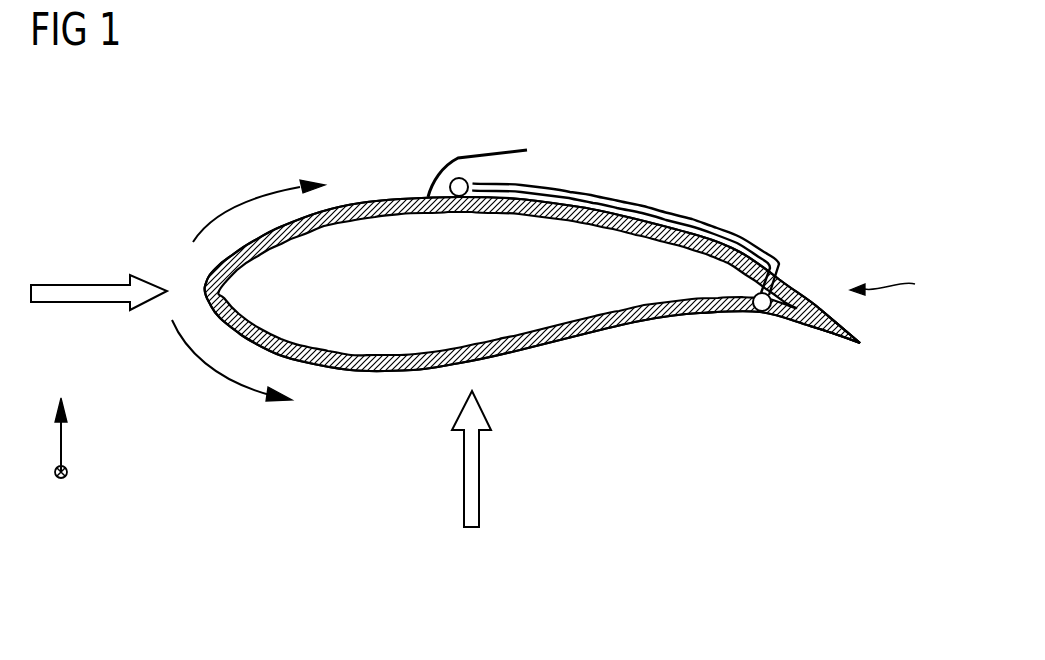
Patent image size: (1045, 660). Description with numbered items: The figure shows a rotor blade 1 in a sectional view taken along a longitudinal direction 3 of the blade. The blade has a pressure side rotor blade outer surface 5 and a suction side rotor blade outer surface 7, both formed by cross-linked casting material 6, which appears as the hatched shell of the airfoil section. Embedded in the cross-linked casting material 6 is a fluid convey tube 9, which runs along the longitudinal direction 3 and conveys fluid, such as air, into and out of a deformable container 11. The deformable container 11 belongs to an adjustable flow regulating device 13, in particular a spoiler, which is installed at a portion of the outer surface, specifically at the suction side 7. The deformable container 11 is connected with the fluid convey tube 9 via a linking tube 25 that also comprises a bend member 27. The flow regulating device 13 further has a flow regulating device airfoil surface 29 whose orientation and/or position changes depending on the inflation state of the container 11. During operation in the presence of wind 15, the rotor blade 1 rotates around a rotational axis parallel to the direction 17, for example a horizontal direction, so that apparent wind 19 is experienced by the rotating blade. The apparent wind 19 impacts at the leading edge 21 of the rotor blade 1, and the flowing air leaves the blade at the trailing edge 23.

The rotor blade 1 is at (522, 236).
The longitudinal direction 3 is at (67, 472).
The pressure side rotor blade outer surface 5 is at (646, 320).
The cross-linked casting material 6 is at (308, 228).
The suction side rotor blade outer surface 7 is at (376, 203).
The fluid convey tube 9 is at (758, 312).
The deformable container 11 is at (446, 206).
The adjustable flow regulating device 13 is at (603, 217).
The wind 15 is at (480, 482).
The direction 17 is at (63, 432).
The apparent wind 19 is at (80, 284).
The leading edge 21 is at (200, 272).
The trailing edge 23 is at (862, 346).
The linking tube 25 is at (647, 204).
The bend member 27 is at (899, 281).
The flow regulating device airfoil surface 29 is at (466, 160).